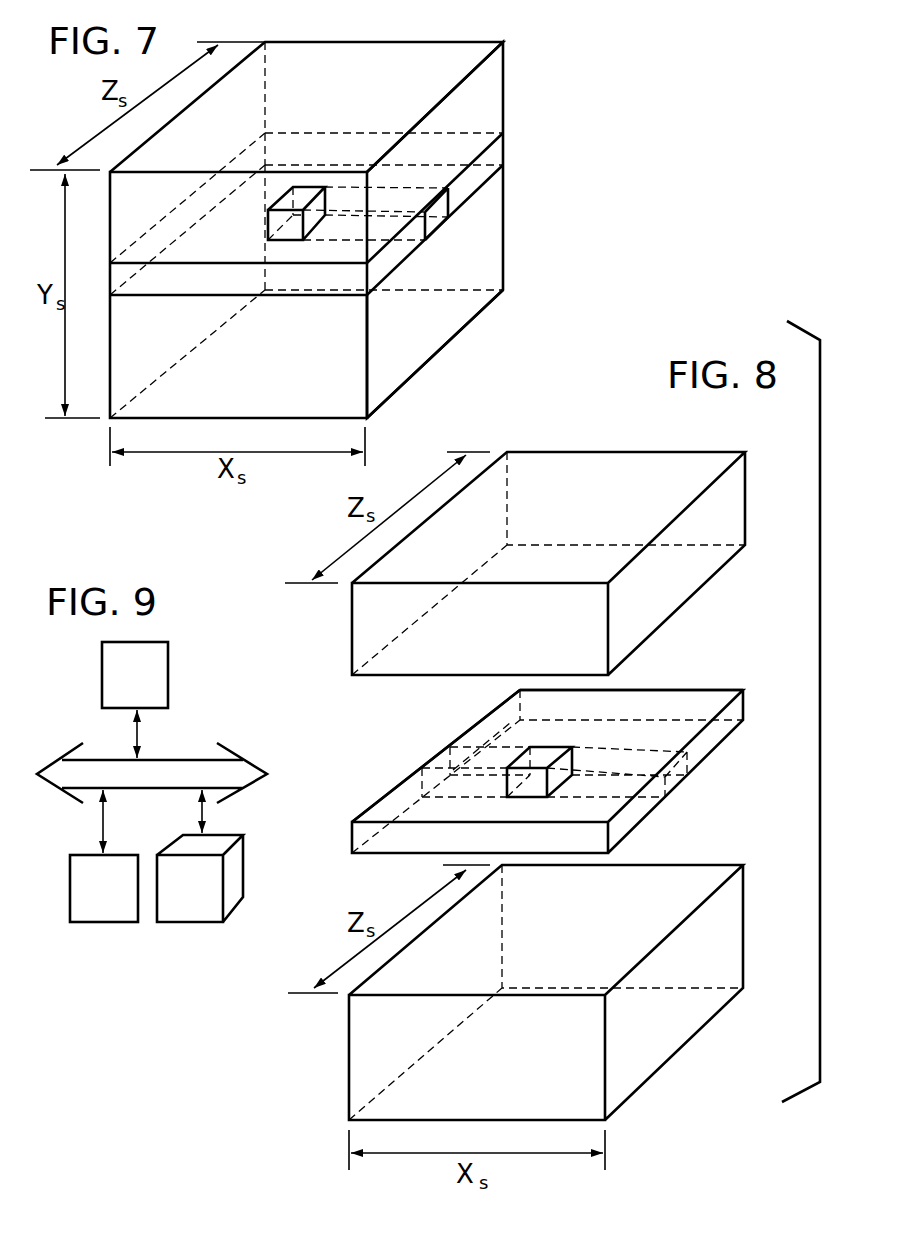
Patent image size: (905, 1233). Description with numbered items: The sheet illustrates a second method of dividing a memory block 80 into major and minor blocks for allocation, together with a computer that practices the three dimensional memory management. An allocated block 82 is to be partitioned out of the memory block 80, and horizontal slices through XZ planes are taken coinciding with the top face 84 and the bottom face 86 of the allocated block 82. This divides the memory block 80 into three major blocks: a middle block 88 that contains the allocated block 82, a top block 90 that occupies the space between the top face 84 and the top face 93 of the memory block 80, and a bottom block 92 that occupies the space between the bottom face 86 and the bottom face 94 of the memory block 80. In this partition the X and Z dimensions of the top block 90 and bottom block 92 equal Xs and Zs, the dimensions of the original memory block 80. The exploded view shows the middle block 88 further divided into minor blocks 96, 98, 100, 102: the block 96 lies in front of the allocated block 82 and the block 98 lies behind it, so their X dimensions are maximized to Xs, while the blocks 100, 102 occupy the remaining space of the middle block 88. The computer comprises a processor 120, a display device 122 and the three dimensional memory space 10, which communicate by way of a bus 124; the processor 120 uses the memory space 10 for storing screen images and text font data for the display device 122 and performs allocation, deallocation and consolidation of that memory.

In FIG. 7, the memory block 80 is at (437, 374).
In FIG. 7, the allocated block 82 is at (298, 245).
In FIG. 8, the allocated block 82 is at (554, 747).
In FIG. 7, the top face 84 is at (303, 193).
In FIG. 7, the bottom face 86 is at (286, 242).
In FIG. 7, the middle block 88 is at (506, 152).
In FIG. 8, the middle block 88 is at (749, 700).
In FIG. 7, the top block 90 is at (506, 90).
In FIG. 8, the top block 90 is at (749, 492).
In FIG. 7, the bottom block 92 is at (506, 228).
In FIG. 8, the bottom block 92 is at (747, 920).
In FIG. 7, the top face 93 is at (373, 58).
In FIG. 7, the bottom face 94 is at (425, 340).
In FIG. 8, the minor block 96 is at (405, 800).
In FIG. 8, the minor block 98 is at (690, 688).
In FIG. 8, the minor block 100 is at (655, 752).
In FIG. 8, the minor block 102 is at (455, 762).
In FIG. 9, the three dimensional memory space 10 is at (238, 873).
In FIG. 9, the processor 120 is at (107, 922).
In FIG. 9, the display device 122 is at (168, 668).
In FIG. 9, the bus 124 is at (172, 758).